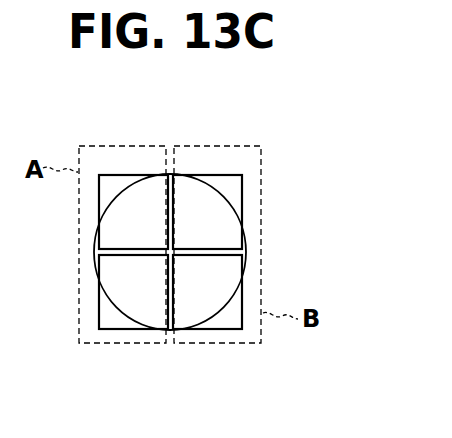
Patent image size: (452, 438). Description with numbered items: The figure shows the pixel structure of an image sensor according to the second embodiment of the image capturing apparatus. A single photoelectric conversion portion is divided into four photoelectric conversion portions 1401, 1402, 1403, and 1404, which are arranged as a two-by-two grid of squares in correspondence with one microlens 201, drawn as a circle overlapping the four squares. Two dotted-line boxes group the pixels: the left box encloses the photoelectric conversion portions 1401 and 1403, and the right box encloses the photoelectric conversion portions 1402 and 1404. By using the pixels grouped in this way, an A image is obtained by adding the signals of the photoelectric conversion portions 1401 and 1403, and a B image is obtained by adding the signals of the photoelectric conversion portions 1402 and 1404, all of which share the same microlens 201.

The microlens 201 is at (247, 245).
The photoelectric conversion portion 1401 is at (121, 175).
The photoelectric conversion portion 1402 is at (232, 175).
The photoelectric conversion portion 1403 is at (120, 330).
The photoelectric conversion portion 1404 is at (230, 330).